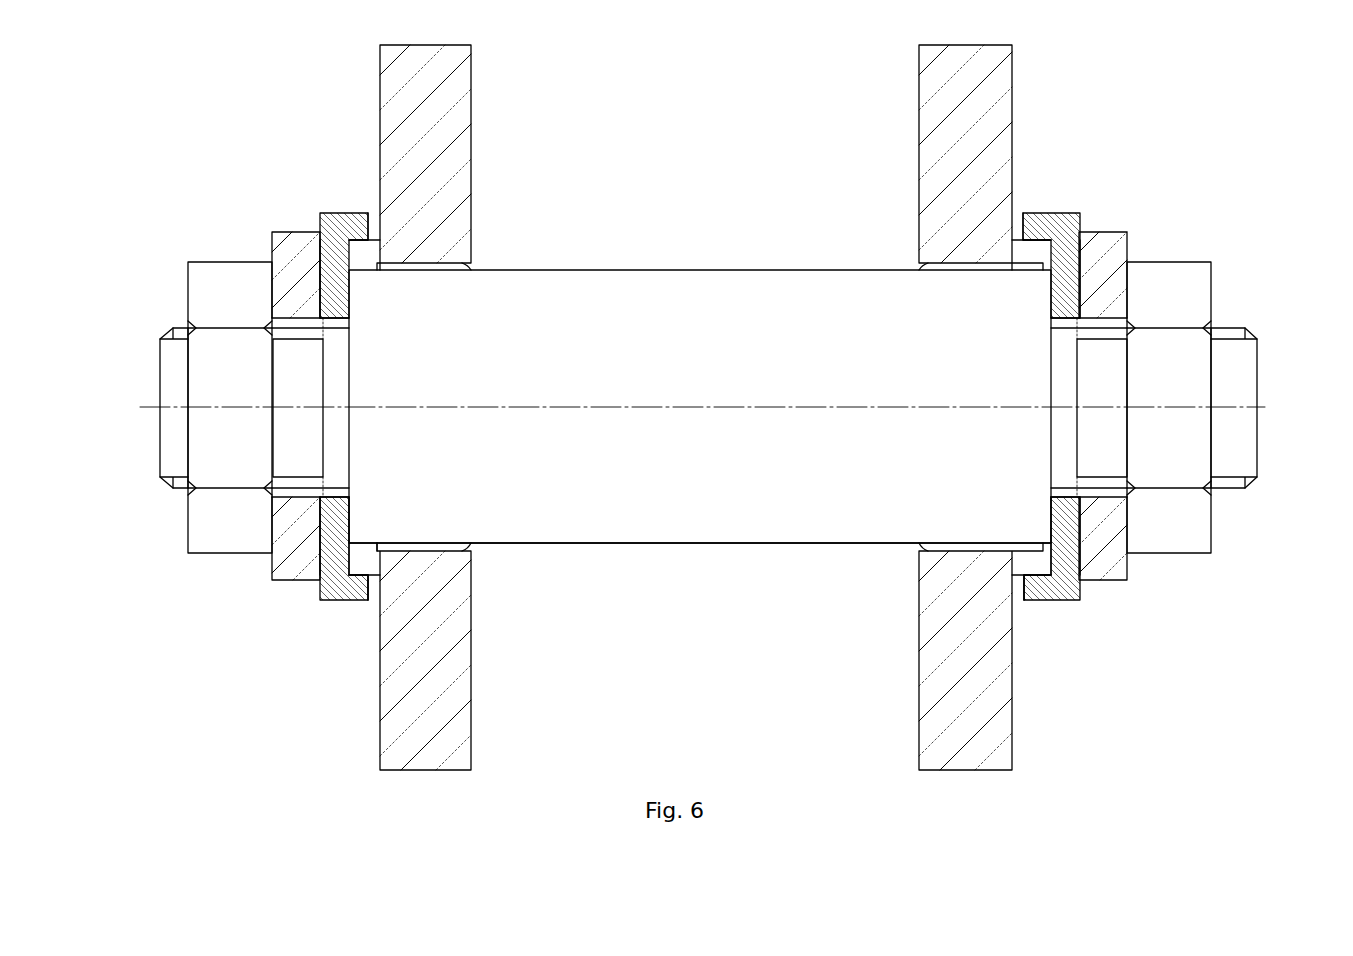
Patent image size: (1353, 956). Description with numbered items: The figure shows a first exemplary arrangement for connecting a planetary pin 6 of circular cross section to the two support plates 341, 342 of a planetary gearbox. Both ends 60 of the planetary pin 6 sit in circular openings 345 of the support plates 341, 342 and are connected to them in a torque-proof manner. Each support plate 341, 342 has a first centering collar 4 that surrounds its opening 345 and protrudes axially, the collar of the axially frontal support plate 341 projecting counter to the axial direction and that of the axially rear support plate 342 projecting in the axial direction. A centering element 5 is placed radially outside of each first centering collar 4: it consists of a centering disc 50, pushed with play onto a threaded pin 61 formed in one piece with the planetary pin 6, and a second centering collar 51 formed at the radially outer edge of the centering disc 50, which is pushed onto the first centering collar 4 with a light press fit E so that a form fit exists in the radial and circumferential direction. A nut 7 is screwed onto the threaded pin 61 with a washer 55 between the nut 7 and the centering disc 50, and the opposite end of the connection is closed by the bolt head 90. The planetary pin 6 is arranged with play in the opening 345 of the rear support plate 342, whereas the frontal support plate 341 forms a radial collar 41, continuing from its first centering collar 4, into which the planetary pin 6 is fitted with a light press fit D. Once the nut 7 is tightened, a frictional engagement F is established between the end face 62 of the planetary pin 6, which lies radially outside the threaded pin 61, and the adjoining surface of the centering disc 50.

The planetary pin 6 is at (686, 558).
The ends of the planetary pin 60 is at (455, 508).
The axially frontal support plate 341 is at (478, 133).
The axially rear support plate 342 is at (912, 140).
The circular opening 345 is at (470, 264).
The nut 7 is at (219, 256).
The washer 55 is at (287, 226).
The centering element 5 is at (330, 207).
The second centering collar 51 is at (357, 222).
The centering disc 50 is at (323, 512).
The radial collar 41 is at (352, 590).
The first centering collar 4 is at (374, 256).
The bolt head 90 is at (148, 405).
The threaded pin 61 is at (297, 452).
The end face 62 is at (332, 510).
The light press fit D is at (362, 557).
The light press fit E is at (366, 562).
The frictional engagement F is at (340, 532).